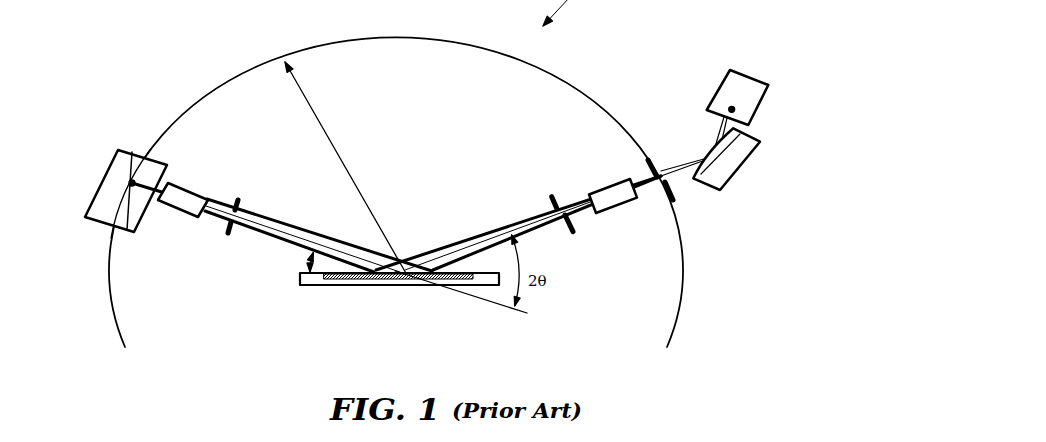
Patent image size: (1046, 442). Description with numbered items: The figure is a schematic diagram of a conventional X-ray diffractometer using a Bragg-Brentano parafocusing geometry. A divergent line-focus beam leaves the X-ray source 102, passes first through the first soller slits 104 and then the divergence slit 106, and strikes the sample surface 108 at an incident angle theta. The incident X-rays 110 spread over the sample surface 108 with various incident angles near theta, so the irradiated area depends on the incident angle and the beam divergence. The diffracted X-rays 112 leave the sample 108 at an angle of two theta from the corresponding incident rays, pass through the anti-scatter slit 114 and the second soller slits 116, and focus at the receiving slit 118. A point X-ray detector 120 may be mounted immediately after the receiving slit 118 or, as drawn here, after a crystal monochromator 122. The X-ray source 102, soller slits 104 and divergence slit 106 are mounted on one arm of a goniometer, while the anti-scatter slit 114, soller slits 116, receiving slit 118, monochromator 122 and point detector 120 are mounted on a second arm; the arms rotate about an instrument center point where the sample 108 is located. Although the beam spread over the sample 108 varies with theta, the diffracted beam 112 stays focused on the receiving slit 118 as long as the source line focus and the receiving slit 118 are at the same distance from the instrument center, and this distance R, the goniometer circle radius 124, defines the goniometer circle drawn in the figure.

The X-ray source 102 is at (108, 202).
The soller slits 1 104 is at (182, 200).
The divergence slit 106 is at (237, 213).
The sample surface 108 is at (330, 279).
The incident X-rays 110 is at (300, 245).
The diffracted X-rays 112 is at (480, 243).
The anti-scatter slit 114 is at (552, 200).
The soller slits 2 116 is at (620, 195).
The receiving slit 118 is at (652, 152).
The point X-ray detector 120 is at (728, 88).
The crystal monochromator 122 is at (740, 145).
The goniometer circle radius 124 is at (223, 88).